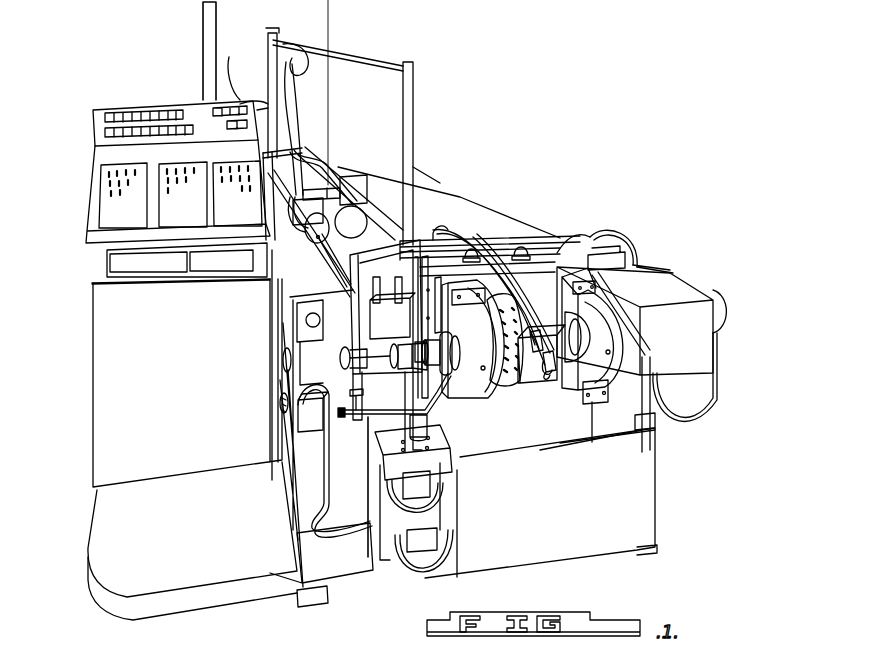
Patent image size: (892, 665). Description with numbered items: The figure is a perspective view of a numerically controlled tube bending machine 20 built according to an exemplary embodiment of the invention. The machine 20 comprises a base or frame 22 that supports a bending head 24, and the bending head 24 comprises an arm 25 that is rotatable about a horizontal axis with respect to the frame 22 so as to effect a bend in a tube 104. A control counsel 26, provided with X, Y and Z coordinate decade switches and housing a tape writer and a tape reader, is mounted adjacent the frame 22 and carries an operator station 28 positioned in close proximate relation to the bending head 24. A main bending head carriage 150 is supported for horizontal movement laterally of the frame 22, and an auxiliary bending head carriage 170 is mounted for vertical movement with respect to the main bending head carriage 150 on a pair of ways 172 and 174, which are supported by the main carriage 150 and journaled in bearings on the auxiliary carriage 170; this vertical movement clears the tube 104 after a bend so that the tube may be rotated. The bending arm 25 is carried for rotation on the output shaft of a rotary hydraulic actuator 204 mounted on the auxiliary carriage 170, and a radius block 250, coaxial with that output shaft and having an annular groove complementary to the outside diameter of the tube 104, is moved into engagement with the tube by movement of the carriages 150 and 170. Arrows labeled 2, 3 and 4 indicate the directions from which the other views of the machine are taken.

The numerically controlled tube bending machine 20 is at (615, 118).
The base or frame 22 is at (282, 463).
The bending head 24 is at (607, 308).
The arm 25 is at (448, 470).
The control counsel 26 is at (80, 200).
The operator station 28 is at (215, 528).
The tube 104 is at (313, 267).
The main bending head carriage 150 is at (547, 226).
The auxiliary bending head carriage 170 is at (565, 253).
The way 172 is at (519, 240).
The way 174 is at (472, 236).
The rotary hydraulic actuator 204 is at (541, 391).
The radius block 250 is at (428, 365).
The view arrow FIG. 2 is at (606, 532).
The view arrow FIG. 3 is at (67, 331).
The view arrow FIG. 4 is at (428, 20).